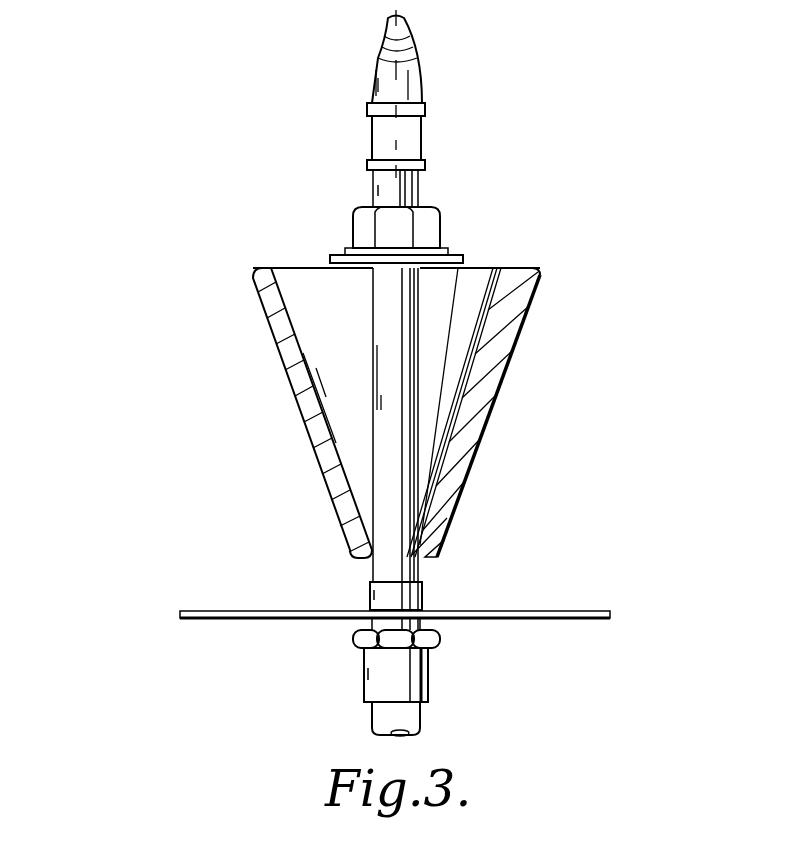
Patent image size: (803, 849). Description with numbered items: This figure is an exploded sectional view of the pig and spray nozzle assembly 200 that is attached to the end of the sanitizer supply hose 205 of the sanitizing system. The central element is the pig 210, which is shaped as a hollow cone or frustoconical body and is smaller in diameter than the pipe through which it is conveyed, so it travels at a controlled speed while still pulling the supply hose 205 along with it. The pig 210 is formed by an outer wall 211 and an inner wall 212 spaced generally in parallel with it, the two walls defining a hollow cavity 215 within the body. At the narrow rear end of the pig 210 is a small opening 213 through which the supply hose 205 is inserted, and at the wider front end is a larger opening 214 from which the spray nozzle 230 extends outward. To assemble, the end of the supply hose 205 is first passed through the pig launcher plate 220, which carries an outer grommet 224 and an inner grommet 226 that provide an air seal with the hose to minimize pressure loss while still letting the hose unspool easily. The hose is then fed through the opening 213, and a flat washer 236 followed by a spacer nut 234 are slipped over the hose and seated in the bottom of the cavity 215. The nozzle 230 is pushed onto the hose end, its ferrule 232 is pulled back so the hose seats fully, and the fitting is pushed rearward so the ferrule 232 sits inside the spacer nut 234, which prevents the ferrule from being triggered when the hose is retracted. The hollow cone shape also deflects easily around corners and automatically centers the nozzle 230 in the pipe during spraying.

The pig and spray nozzle assembly 200 is at (168, 399).
The supply hose 205 is at (400, 713).
The pig 210 is at (322, 465).
The outer wall 211 is at (285, 360).
The inner wall 212 is at (288, 340).
The opening 213 is at (428, 575).
The larger opening 214 is at (428, 412).
The hollow cavity 215 is at (463, 358).
The pig launcher plate 220 is at (180, 614).
The outer grommet 224 is at (355, 640).
The inner grommet 226 is at (422, 597).
The spray nozzle 230 is at (380, 75).
The ferrule 232 is at (368, 153).
The spacer nut 234 is at (432, 228).
The flat washer 236 is at (345, 258).